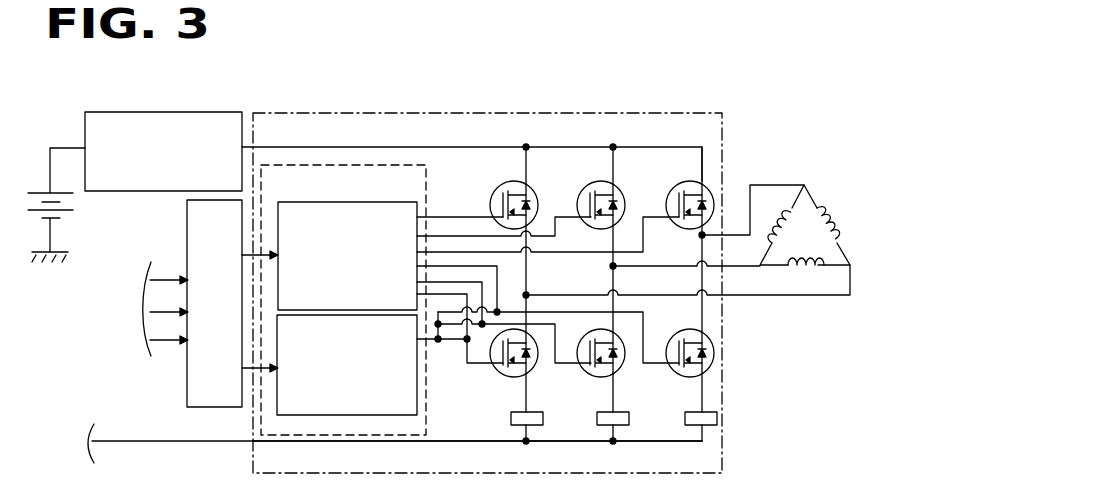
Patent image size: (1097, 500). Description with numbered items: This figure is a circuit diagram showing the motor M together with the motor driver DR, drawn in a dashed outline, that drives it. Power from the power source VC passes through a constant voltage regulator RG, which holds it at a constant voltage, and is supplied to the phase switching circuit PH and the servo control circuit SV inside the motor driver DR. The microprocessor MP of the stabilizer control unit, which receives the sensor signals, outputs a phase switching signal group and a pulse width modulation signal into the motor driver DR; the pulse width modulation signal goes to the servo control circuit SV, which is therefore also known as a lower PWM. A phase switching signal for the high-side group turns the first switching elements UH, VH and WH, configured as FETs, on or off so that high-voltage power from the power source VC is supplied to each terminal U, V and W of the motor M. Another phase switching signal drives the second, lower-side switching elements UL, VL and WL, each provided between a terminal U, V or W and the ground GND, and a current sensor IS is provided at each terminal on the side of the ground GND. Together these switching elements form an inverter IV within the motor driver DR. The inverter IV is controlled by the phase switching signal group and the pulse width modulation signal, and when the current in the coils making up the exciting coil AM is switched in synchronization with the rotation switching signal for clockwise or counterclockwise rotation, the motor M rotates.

The motor driver DR is at (562, 113).
The constant voltage regulator RG is at (147, 112).
The power source VC is at (54, 247).
The ground GND is at (354, 442).
The microprocessor MP is at (187, 378).
The phase switching circuit PH is at (355, 202).
The servo control circuit SV is at (310, 415).
The first switching element UH is at (508, 194).
The first switching element VH is at (595, 194).
The first switching element WH is at (681, 194).
The second switching element UL is at (508, 369).
The second switching element VL is at (595, 369).
The second switching element WL is at (683, 369).
The current sensor IS is at (717, 415).
The terminal U is at (751, 211).
The terminal V is at (685, 256).
The terminal W is at (686, 281).
The motor M is at (794, 206).
The exciting coil AM is at (833, 208).
The inverter IV is at (580, 448).